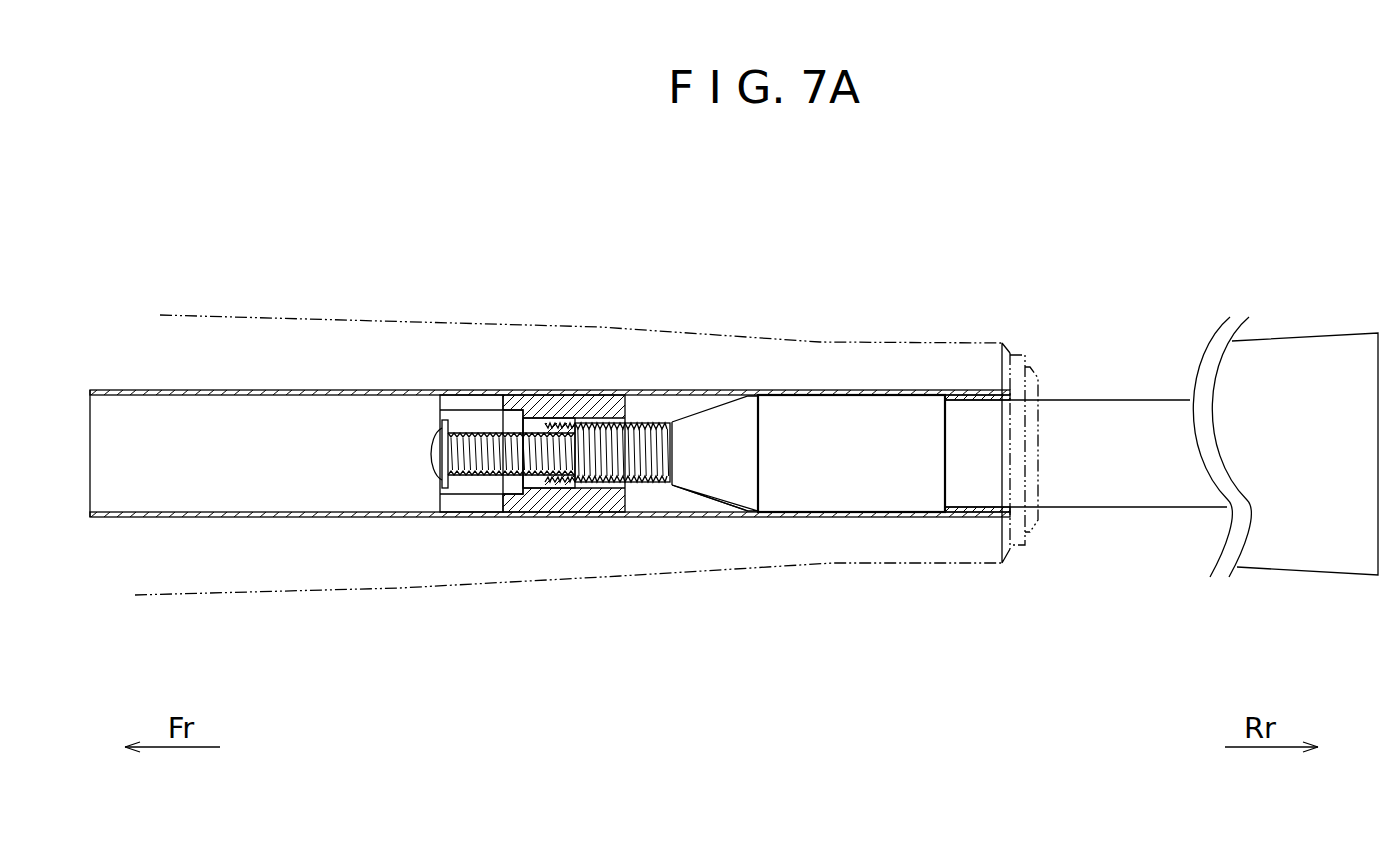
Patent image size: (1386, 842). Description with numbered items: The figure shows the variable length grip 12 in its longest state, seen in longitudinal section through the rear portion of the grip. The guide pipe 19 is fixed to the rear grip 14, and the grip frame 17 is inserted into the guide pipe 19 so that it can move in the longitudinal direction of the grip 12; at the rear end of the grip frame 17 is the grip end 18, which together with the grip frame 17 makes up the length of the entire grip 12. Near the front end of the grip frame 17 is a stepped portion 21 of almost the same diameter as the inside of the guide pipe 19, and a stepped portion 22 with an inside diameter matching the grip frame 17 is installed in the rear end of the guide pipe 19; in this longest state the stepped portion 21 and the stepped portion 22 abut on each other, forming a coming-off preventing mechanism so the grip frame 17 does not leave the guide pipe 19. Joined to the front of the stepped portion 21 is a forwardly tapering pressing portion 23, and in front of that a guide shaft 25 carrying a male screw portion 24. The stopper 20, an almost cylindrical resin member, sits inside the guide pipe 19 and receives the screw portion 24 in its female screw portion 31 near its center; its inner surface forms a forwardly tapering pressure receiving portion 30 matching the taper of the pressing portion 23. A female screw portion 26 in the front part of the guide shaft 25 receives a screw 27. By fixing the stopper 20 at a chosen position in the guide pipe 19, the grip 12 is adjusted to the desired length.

The grip 12 is at (842, 324).
The rear grip 14 is at (883, 563).
The grip frame 17 is at (1097, 500).
The grip end 18 is at (1288, 558).
The guide pipe 19 is at (294, 390).
The stopper 20 is at (535, 395).
The stepped portion 21 is at (898, 400).
The stepped portion 22 is at (963, 400).
The pressing portion 23 is at (733, 432).
The screw portion 24 is at (645, 400).
The guide shaft 25 is at (457, 490).
The screw portion 26 is at (530, 452).
The screw 27 is at (481, 440).
The pressure receiving portion 30 is at (717, 495).
The screw portion 31 is at (583, 463).